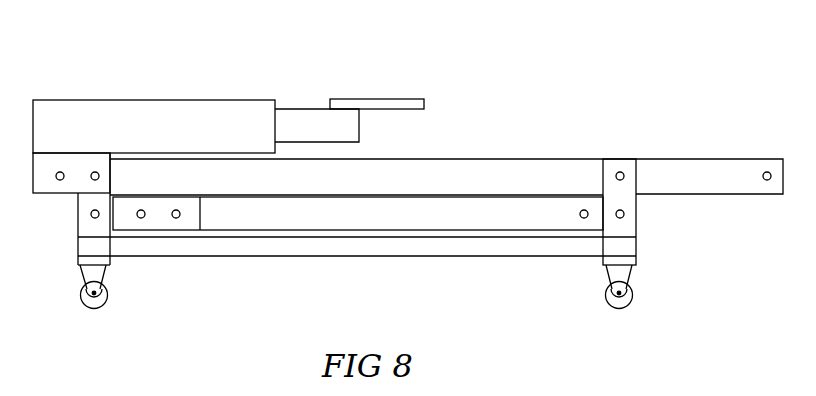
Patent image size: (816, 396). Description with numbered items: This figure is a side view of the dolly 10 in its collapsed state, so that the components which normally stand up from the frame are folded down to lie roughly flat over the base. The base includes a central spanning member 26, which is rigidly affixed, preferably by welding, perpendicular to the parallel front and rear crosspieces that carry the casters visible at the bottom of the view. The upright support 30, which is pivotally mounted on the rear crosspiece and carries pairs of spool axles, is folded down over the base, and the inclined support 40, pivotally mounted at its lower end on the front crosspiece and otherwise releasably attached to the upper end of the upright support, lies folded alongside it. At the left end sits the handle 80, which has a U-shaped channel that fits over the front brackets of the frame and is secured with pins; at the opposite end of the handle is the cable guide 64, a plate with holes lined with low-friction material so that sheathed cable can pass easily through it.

The dolly 10 is at (408, 196).
The central spanning member 26 is at (317, 258).
The upright support 30 is at (511, 230).
The inclined support 40 is at (577, 159).
The cable guide 64 is at (405, 99).
The handle 80 is at (188, 100).